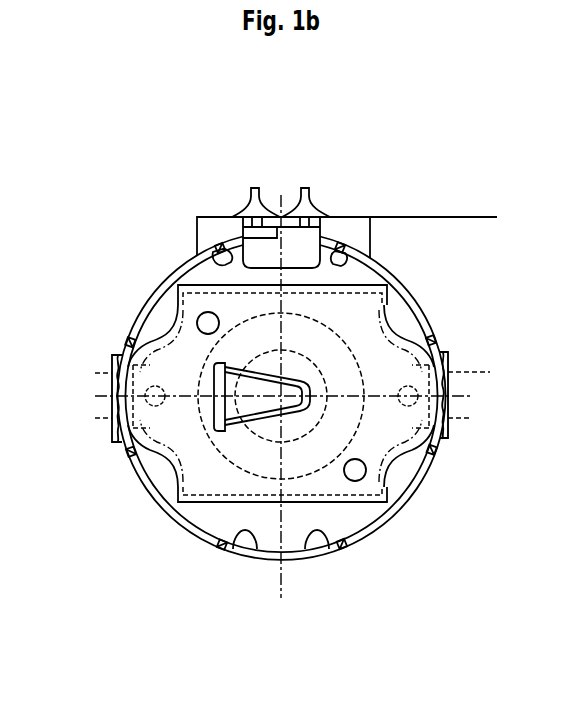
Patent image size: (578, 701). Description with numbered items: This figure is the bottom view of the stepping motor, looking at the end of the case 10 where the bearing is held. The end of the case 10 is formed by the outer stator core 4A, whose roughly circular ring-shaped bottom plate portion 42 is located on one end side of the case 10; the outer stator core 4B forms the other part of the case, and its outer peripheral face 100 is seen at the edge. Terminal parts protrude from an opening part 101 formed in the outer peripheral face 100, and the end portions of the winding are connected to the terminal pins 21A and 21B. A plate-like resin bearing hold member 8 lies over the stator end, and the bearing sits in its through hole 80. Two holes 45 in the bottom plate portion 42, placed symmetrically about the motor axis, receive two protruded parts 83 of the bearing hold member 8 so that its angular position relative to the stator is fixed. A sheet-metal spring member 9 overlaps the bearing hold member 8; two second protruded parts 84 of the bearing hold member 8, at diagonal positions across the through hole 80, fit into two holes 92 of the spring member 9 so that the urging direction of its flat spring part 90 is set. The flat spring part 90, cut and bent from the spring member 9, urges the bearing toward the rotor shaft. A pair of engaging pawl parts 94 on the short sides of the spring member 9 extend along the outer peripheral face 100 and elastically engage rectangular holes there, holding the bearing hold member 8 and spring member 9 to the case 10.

The outer peripheral face 100 is at (406, 280).
The opening part 101 is at (300, 261).
The terminal pin 21A is at (256, 187).
The terminal pin 21B is at (306, 188).
The bearing hold member 8 is at (313, 418).
The through hole 80 is at (375, 470).
The second protruded part 84 is at (199, 316).
The hole 92 is at (281, 396).
The hole 45 is at (146, 394).
The protruded part 83 is at (280, 397).
The engaging pawl part 94 is at (115, 430).
The flat spring part 90 is at (234, 415).
The spring member 9 is at (180, 527).
The outer stator core 4A is at (222, 525).
The outer stator core 4B is at (183, 527).
The case 10 is at (222, 635).
The bottom plate portion 42 is at (264, 517).